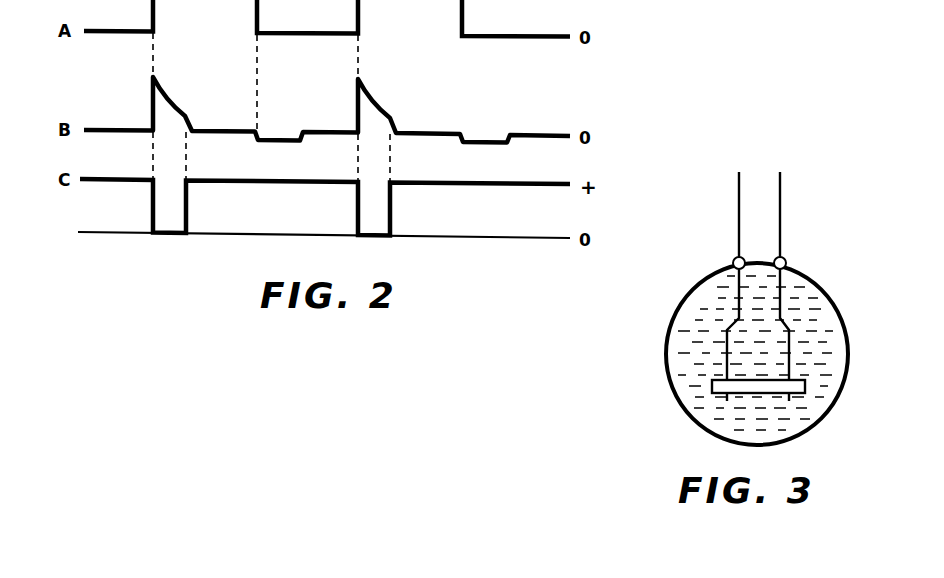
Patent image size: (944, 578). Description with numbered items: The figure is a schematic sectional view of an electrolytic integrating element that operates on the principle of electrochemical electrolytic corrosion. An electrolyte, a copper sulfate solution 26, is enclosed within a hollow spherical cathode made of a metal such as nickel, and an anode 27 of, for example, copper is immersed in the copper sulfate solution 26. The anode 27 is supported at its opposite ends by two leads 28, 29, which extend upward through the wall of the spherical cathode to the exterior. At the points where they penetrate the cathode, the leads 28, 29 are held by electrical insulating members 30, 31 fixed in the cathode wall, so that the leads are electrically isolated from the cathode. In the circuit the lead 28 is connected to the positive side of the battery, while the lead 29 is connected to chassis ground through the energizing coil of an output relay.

The copper sulfate solution 26 is at (681, 404).
The anode 27 is at (754, 394).
The lead 28 is at (725, 344).
The lead 29 is at (792, 357).
The electrical insulating member 30 is at (734, 258).
The electrical insulating member 31 is at (786, 258).